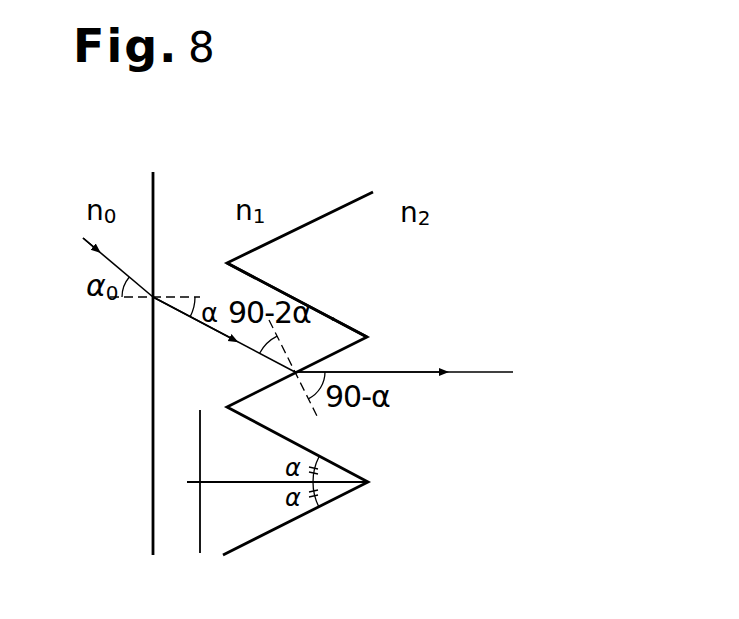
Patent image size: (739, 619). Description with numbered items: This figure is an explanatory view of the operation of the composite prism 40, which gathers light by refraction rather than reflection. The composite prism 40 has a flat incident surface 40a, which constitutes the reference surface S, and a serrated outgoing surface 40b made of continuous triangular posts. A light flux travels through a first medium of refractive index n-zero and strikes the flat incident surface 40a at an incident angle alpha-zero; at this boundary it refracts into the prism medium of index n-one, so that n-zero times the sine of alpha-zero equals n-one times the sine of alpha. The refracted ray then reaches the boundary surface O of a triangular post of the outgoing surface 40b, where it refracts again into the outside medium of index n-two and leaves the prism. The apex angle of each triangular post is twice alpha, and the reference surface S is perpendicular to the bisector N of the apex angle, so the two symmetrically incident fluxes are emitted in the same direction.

The composite prism 40 is at (253, 500).
The flat incident surface 40a is at (153, 418).
The serrated outgoing surface 40b is at (343, 337).
The boundary surface O is at (333, 319).
The reference surface S is at (200, 458).
The bisector N is at (223, 485).